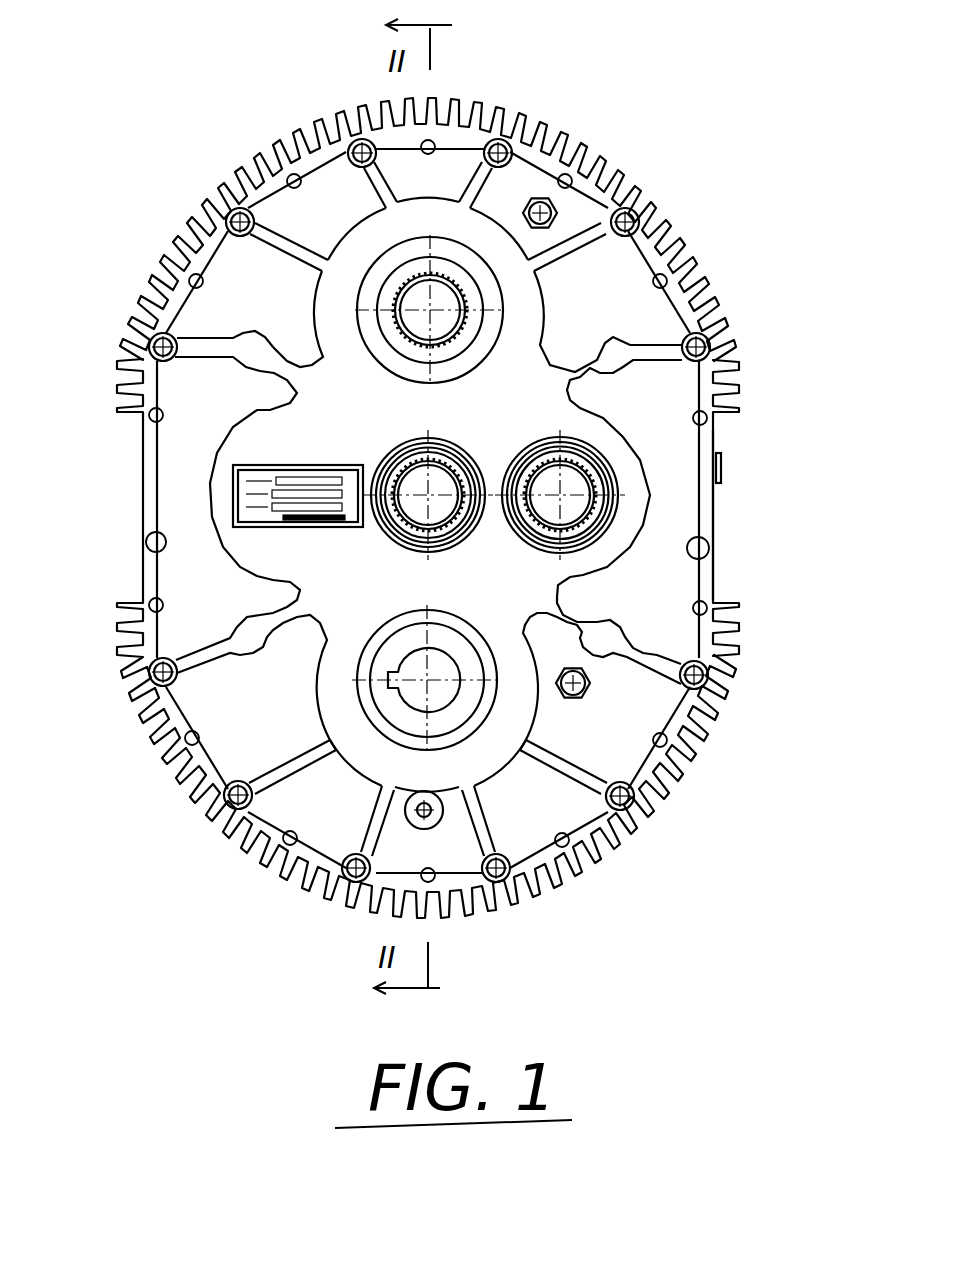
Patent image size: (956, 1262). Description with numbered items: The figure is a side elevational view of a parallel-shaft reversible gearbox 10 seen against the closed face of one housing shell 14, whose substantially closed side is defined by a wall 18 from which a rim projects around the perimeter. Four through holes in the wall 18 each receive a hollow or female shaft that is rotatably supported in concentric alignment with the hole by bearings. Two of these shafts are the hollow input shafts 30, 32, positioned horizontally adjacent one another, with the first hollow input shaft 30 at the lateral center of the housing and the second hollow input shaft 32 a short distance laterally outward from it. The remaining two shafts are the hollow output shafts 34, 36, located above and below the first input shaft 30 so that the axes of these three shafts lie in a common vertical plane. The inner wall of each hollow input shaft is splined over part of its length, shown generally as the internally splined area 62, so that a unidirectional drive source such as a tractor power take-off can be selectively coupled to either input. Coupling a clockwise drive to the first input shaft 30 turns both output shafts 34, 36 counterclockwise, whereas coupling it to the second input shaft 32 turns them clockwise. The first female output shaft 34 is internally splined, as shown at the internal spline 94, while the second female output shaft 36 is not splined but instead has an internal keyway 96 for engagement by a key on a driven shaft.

The parallel-shaft reversible gearbox 10 is at (190, 80).
The housing shell 14 is at (676, 566).
The wall 18 is at (683, 505).
The first hollow input shaft 30 is at (440, 548).
The second hollow input shaft 32 is at (522, 452).
The first hollow output shaft 34 is at (395, 345).
The second hollow output shaft 36 is at (395, 643).
The internally splined area 62 is at (460, 447).
The internal spline 94 is at (445, 305).
The internal keyway 96 is at (400, 700).